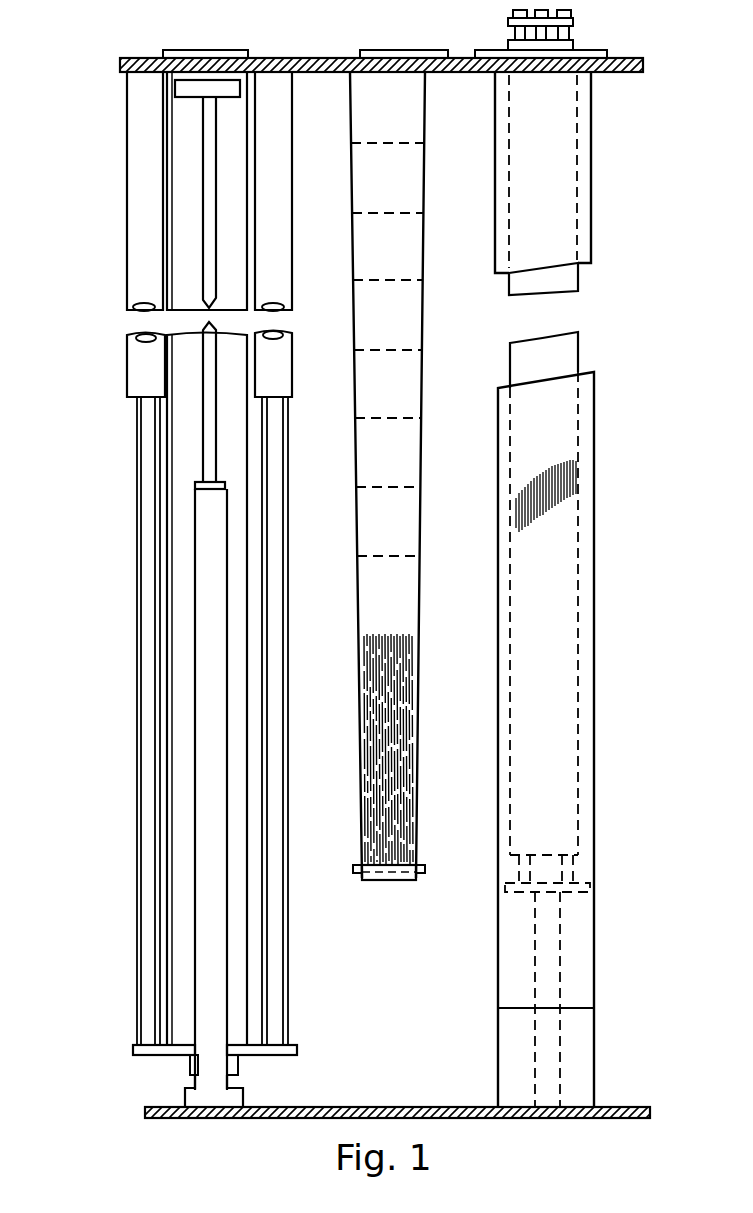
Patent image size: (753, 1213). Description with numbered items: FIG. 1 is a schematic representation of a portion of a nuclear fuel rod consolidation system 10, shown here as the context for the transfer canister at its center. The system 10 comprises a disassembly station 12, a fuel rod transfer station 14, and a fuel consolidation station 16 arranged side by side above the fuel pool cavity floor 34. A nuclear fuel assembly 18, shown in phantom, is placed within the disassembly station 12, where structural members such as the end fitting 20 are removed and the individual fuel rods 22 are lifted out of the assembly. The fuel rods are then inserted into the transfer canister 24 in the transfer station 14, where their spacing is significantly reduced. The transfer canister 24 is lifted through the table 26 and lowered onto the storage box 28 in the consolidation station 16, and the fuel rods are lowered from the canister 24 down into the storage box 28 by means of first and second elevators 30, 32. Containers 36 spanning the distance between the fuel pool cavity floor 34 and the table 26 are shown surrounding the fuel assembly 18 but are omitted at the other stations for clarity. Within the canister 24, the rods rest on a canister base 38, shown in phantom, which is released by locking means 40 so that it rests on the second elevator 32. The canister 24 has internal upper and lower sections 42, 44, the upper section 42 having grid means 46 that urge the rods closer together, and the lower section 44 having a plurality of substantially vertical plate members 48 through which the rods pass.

The nuclear fuel rod consolidation system 10 is at (619, 713).
The disassembly station 12 is at (606, 186).
The fuel rod transfer station 14 is at (378, 926).
The fuel consolidation station 16 is at (118, 178).
The nuclear fuel assembly 18 is at (578, 605).
The end fitting 20 is at (576, 31).
The fuel rods 22 is at (578, 492).
The transfer canister 24 is at (432, 370).
The table 26 is at (620, 72).
The storage box 28 is at (170, 919).
The first elevator 30 is at (132, 1041).
The second elevator 32 is at (183, 105).
The fuel pool cavity floor 34 is at (152, 1106).
The containers 36 is at (596, 750).
The canister base 38 is at (400, 880).
The locking means 40 is at (357, 870).
The upper section 42 is at (420, 625).
The lower section 44 is at (419, 828).
The grid means 46 is at (388, 537).
The vertical plate members 48 is at (400, 770).